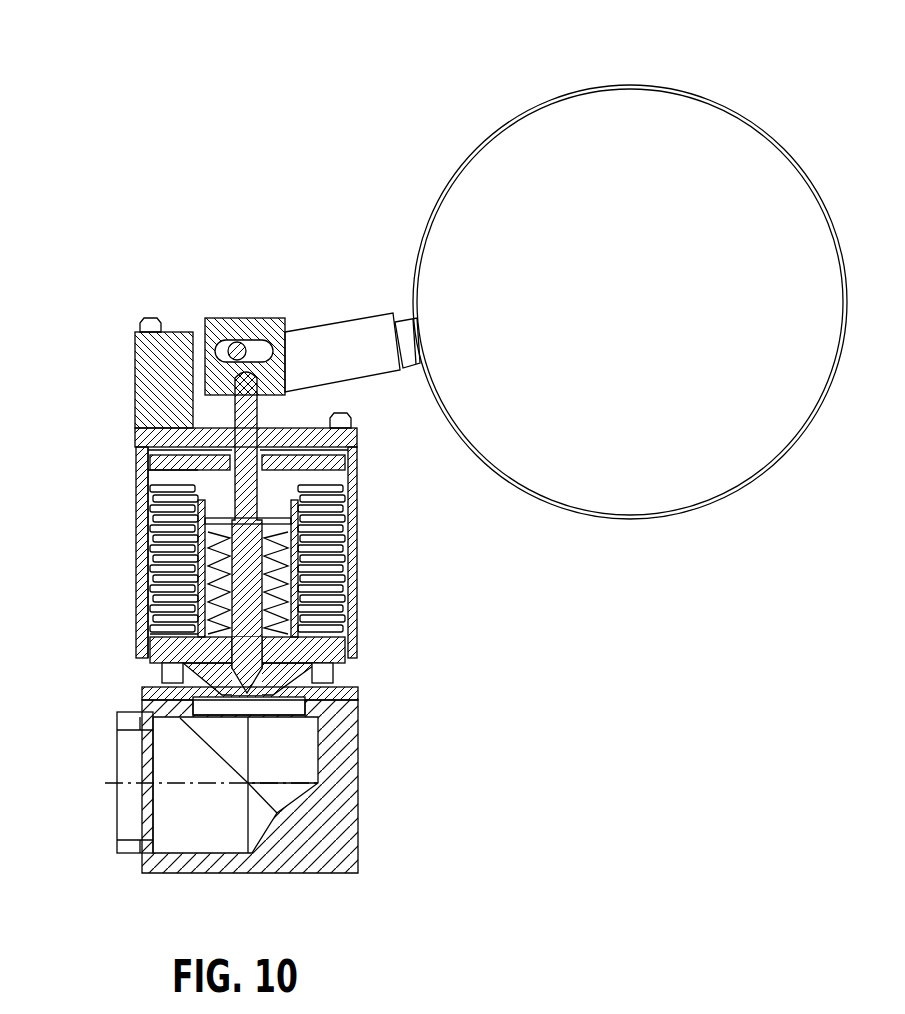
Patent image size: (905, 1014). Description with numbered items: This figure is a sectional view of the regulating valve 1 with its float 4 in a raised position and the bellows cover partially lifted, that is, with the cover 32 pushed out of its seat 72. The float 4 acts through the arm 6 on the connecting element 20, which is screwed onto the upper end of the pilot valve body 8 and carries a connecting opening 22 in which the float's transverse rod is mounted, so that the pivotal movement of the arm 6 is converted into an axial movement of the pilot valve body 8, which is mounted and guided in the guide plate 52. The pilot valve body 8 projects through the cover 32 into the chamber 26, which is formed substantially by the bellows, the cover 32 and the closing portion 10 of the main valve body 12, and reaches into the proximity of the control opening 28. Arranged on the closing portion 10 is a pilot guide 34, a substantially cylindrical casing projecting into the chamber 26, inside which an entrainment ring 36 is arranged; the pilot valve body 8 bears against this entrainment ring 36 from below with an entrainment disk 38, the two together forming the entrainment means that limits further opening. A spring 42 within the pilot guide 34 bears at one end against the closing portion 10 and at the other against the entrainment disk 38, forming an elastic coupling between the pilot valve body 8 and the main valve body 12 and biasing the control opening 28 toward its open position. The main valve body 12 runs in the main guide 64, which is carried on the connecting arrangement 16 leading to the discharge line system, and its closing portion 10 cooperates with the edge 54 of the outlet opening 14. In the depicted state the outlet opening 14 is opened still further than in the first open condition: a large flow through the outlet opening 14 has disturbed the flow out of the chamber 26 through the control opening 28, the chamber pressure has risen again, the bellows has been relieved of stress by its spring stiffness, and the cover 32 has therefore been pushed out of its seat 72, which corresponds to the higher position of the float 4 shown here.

The regulating valve 1 is at (345, 172).
The float 4 is at (630, 302).
The arm 6 is at (327, 338).
The pilot valve body 8 is at (358, 545).
The closing portion 10 is at (312, 684).
The main valve body 12 is at (163, 452).
The outlet opening 14 is at (293, 704).
The connecting arrangement 16 is at (211, 782).
The connecting element 20 is at (250, 335).
The connecting opening 22 is at (233, 343).
The chamber 26 is at (170, 560).
The control opening 28 is at (250, 698).
The cover 32 is at (348, 450).
The pilot guide 34 is at (170, 611).
The entrainment ring 36 is at (295, 490).
The entrainment disk 38 is at (295, 528).
The spring 42 is at (300, 612).
The guide plate 52 is at (360, 436).
The edge 54 is at (333, 690).
The main guide 64 is at (140, 522).
The seat 72 is at (145, 485).